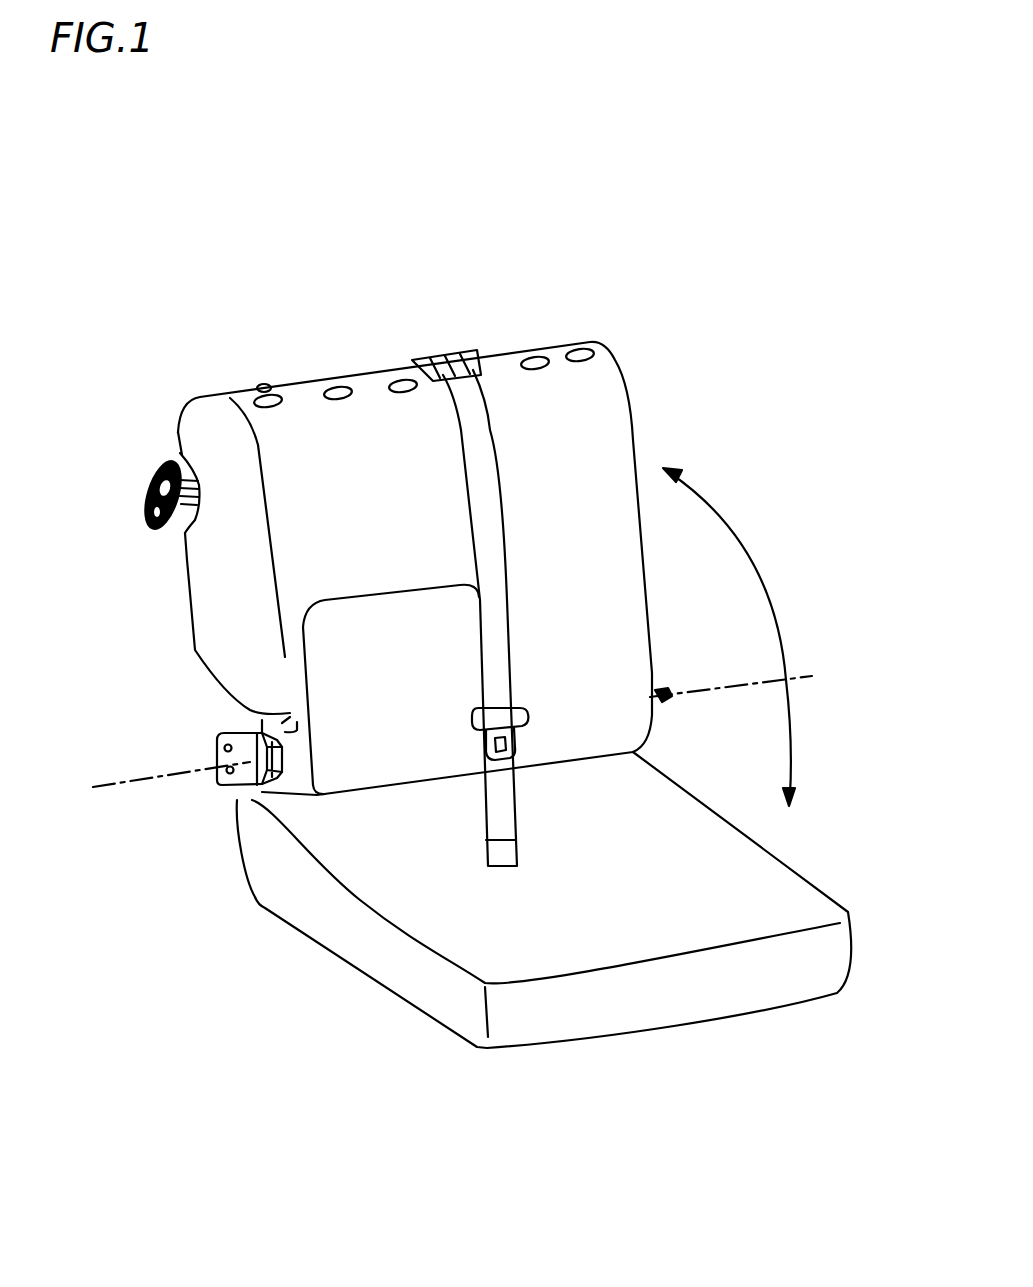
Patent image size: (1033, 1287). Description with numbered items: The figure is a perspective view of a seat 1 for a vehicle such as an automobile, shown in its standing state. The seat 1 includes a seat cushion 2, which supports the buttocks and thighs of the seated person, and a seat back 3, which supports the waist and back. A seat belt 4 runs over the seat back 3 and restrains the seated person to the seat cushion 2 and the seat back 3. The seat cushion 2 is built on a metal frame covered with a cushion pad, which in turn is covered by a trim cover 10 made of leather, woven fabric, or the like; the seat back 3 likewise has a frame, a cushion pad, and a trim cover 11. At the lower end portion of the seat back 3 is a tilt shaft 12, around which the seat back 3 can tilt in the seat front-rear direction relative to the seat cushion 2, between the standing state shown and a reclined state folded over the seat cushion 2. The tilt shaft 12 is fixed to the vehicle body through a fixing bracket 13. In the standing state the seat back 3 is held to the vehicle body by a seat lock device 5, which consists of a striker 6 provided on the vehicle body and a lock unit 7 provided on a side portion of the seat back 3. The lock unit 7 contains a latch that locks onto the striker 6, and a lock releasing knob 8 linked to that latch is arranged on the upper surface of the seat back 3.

The seat 1 is at (452, 475).
The seat cushion 2 is at (846, 898).
The seat back 3 is at (628, 372).
The seat belt 4 is at (497, 437).
The seat lock device 5 is at (153, 367).
The striker 6 is at (147, 466).
The lock unit 7 is at (176, 462).
The lock releasing knob 8 is at (268, 390).
The trim cover 10 is at (792, 865).
The trim cover 11 is at (608, 430).
The tilt shaft 12 is at (668, 690).
The fixing bracket 13 is at (223, 788).